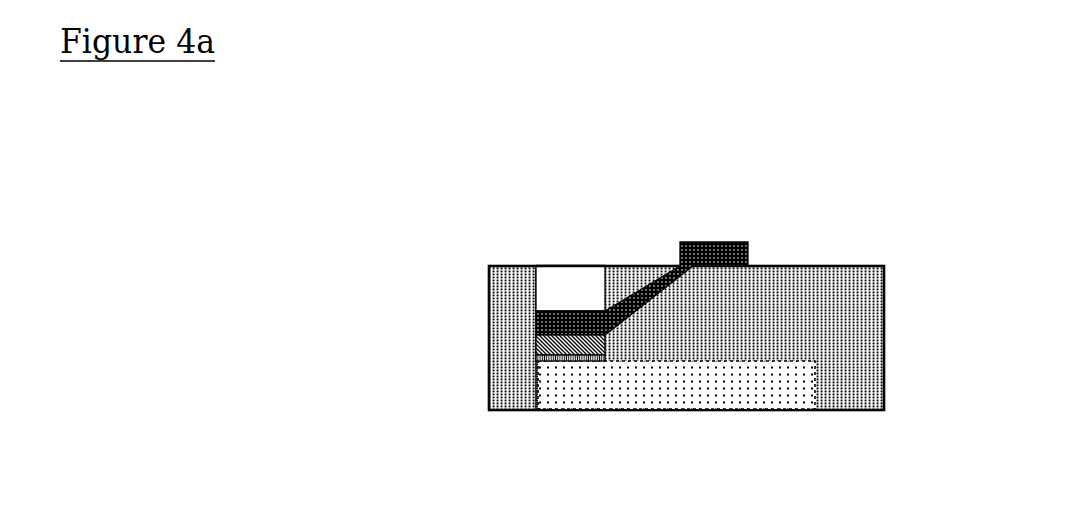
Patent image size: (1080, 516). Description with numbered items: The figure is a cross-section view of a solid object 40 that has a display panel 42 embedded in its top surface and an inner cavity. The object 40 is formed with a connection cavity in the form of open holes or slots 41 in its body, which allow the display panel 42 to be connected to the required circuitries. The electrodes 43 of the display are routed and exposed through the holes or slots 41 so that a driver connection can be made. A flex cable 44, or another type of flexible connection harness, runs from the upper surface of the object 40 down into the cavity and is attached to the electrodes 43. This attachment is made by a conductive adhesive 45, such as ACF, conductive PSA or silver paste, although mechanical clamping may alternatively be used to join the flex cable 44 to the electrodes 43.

The object 40 is at (860, 336).
The holes or slots 41 is at (558, 265).
The display panel 42 is at (752, 410).
The electrodes 43 is at (557, 362).
The flex cable 44 is at (748, 241).
The conductive adhesive 45 is at (537, 352).